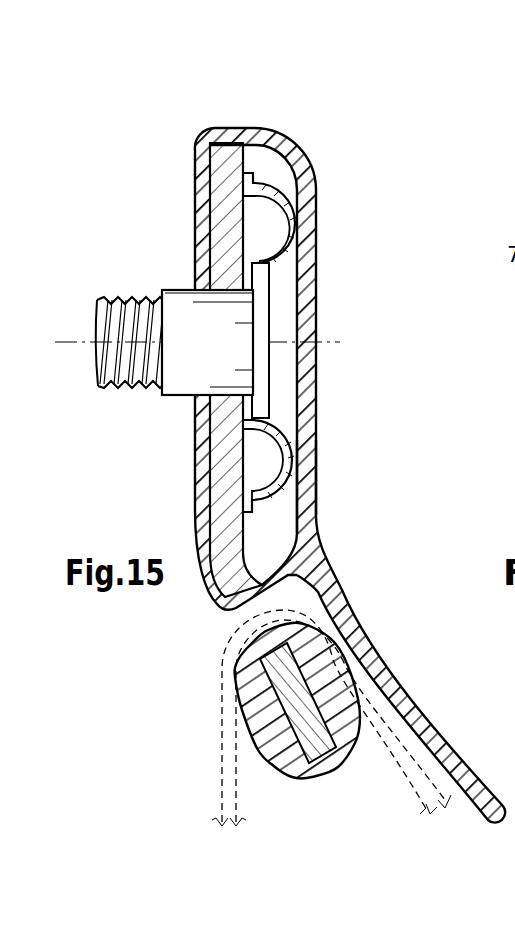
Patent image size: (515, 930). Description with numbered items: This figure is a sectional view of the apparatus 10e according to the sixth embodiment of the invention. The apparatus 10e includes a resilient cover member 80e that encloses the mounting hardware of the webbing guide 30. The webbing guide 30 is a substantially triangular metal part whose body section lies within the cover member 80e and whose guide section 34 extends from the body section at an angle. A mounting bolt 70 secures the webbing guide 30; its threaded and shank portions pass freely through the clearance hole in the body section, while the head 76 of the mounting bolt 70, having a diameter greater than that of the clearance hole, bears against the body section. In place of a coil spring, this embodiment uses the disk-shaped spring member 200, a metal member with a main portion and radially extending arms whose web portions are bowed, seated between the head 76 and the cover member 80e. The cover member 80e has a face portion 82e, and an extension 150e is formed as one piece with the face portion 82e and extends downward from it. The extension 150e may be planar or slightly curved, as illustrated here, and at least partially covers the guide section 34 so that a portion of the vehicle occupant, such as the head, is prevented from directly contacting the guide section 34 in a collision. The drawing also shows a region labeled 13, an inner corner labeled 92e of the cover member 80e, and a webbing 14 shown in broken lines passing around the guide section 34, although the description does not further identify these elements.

The apparatus 10e is at (284, 96).
The resilient cover member 80e is at (322, 152).
The webbing guide 30 is at (200, 197).
The mounting bolt 70 is at (127, 290).
The cavity 13 is at (379, 265).
The head 76 is at (262, 302).
The disk-shaped spring member 200 is at (294, 440).
The face portion 82e is at (316, 467).
The inner corner 92e is at (274, 531).
The guide section 34 is at (322, 666).
The extension 150e is at (408, 722).
The belt / strap 14 is at (420, 787).